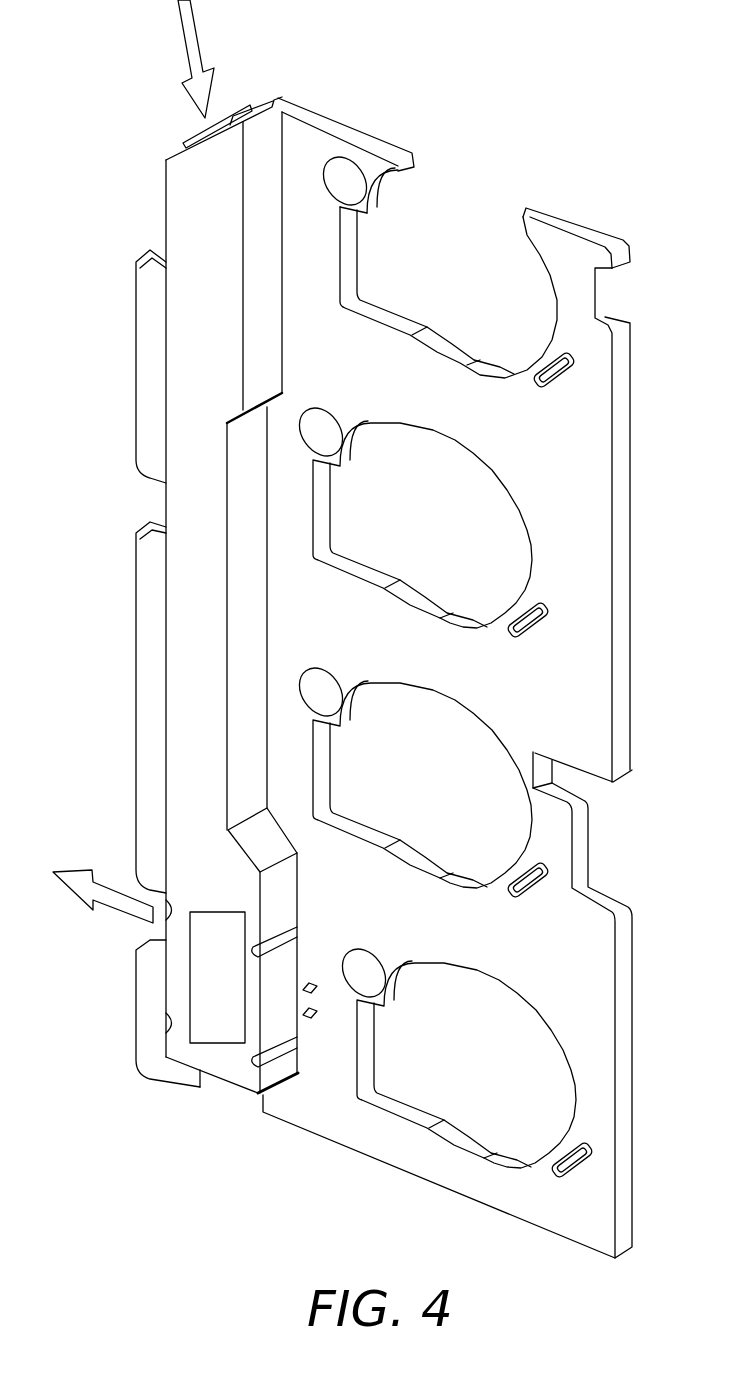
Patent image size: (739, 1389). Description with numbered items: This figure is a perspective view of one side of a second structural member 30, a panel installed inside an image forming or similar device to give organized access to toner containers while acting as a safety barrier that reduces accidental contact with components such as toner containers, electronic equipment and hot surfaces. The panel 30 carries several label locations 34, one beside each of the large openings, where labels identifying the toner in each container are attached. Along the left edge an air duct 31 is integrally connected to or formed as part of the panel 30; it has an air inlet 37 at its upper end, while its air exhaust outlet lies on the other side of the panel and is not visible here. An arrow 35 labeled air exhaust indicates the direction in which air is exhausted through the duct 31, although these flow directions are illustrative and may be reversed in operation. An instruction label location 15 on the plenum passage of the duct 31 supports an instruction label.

The instruction label location 15 is at (217, 977).
The second structural member 30 is at (558, 176).
The air duct 31 is at (183, 210).
The label location 34 is at (335, 182).
The arrow 35 is at (113, 903).
The air inlet 37 is at (237, 110).